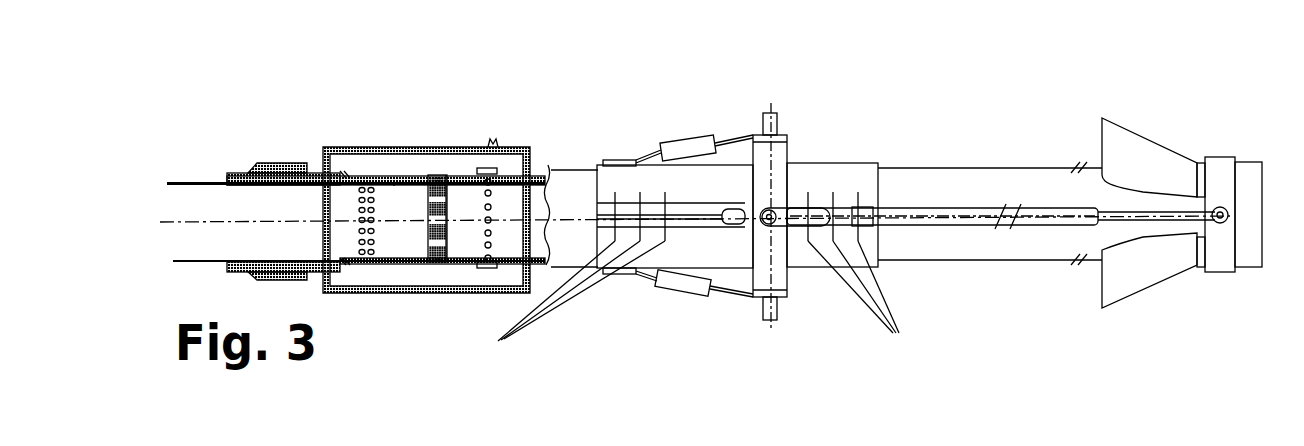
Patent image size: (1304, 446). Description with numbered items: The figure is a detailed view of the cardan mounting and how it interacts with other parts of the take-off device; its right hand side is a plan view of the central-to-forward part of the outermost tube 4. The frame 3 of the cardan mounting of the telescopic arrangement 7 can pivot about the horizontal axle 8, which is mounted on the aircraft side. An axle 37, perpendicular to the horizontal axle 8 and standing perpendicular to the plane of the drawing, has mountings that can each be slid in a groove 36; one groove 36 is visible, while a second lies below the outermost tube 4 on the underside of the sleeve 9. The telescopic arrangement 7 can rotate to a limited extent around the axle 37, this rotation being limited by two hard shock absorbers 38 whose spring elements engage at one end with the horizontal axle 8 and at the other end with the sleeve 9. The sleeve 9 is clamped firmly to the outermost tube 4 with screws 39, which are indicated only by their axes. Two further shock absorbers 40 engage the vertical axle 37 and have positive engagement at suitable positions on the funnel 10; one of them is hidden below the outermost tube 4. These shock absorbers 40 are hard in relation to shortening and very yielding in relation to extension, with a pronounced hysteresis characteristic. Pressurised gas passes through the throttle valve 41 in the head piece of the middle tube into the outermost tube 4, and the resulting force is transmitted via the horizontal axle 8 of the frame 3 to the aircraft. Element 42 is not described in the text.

The frame 3 is at (782, 177).
The outermost tube 4 is at (928, 167).
The telescopic arrangement 7 is at (677, 325).
The horizontal axle 8 is at (778, 118).
The sleeve 9 is at (853, 162).
The funnel 10 is at (1110, 137).
The groove 36 is at (741, 226).
The axle 37 is at (766, 212).
The shock absorbers 38 is at (682, 148).
The screws 39 is at (701, 280).
The shock absorbers 40 is at (932, 216).
The throttle valve 41 is at (425, 221).
The sealing insert 42 is at (447, 200).